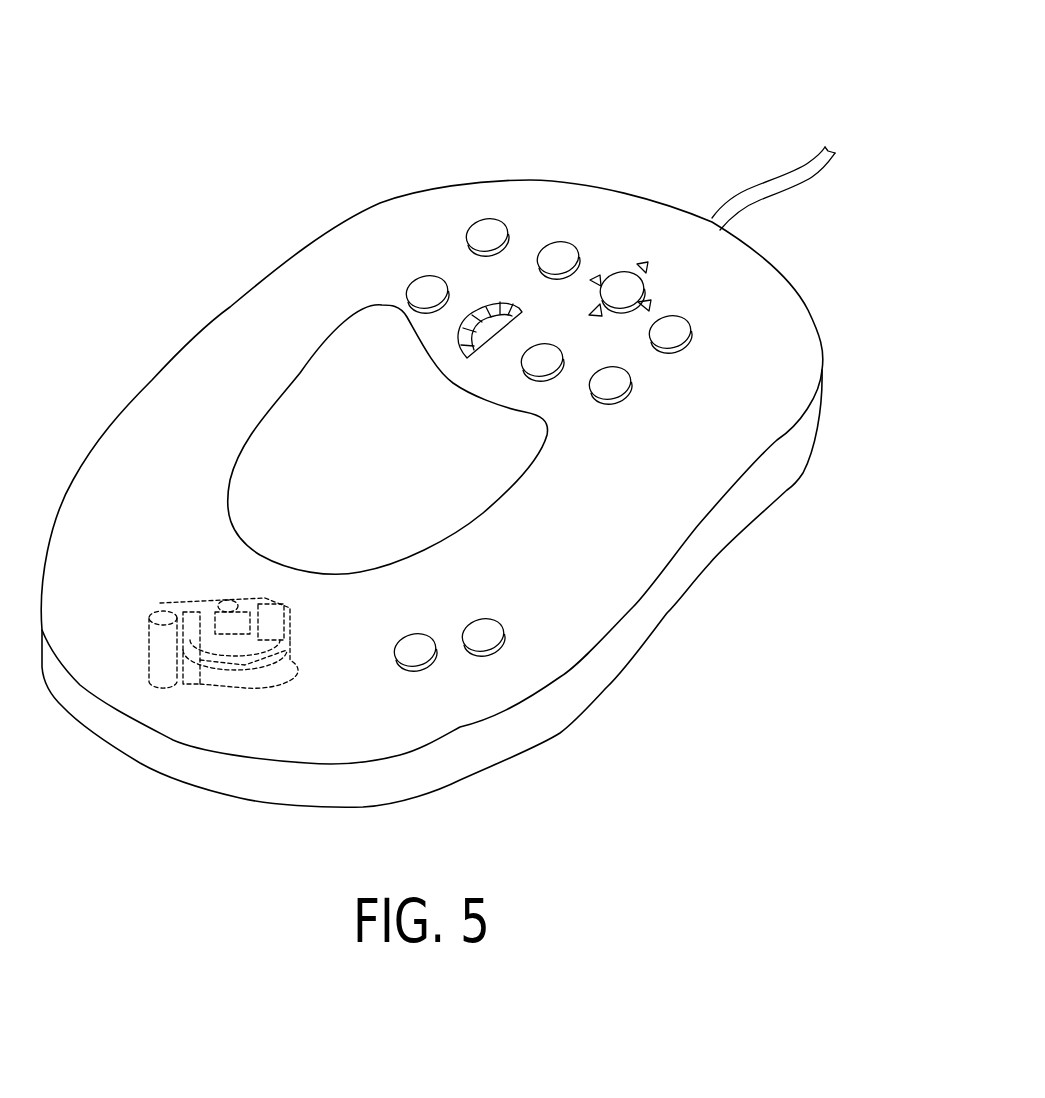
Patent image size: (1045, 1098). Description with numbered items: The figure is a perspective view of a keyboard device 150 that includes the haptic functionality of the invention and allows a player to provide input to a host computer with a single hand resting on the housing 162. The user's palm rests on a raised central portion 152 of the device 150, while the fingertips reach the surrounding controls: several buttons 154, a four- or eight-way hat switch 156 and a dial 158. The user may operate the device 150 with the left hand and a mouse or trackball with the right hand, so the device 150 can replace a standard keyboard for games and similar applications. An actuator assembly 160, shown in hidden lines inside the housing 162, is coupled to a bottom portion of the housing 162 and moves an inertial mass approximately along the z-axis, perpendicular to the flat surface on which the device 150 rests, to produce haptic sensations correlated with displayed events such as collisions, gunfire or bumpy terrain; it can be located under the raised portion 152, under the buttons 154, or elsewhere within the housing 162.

The keyboard device 150 is at (664, 89).
The raised central portion 152 is at (398, 477).
The buttons 154 is at (562, 250).
The hat switch 156 is at (618, 280).
The dial 158 is at (482, 312).
The actuator assembly 160 is at (212, 685).
The housing 162 is at (165, 405).